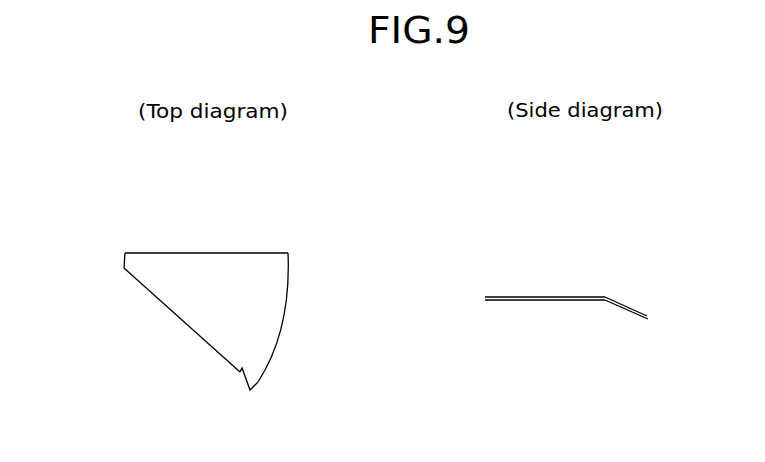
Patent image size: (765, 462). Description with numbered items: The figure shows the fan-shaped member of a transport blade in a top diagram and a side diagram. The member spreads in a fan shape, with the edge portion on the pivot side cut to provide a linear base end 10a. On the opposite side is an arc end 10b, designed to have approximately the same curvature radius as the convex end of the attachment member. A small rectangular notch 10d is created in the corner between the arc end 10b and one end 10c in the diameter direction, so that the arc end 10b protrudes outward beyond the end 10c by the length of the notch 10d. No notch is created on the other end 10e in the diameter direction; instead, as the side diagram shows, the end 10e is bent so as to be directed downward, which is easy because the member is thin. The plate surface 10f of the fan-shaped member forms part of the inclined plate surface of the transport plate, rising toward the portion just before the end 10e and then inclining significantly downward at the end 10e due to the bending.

The linear base end 10a is at (125, 262).
The arc end 10b is at (283, 324).
The one end in the diameter direction 10c is at (170, 315).
The notch 10d is at (243, 380).
The other end in the diameter direction 10e is at (233, 253).
The plate surface 10f is at (255, 300).